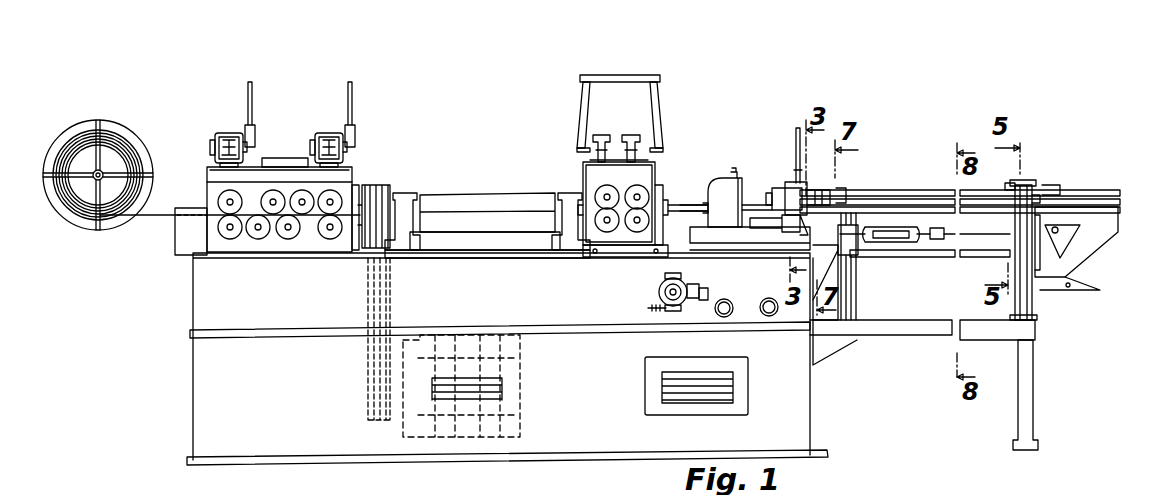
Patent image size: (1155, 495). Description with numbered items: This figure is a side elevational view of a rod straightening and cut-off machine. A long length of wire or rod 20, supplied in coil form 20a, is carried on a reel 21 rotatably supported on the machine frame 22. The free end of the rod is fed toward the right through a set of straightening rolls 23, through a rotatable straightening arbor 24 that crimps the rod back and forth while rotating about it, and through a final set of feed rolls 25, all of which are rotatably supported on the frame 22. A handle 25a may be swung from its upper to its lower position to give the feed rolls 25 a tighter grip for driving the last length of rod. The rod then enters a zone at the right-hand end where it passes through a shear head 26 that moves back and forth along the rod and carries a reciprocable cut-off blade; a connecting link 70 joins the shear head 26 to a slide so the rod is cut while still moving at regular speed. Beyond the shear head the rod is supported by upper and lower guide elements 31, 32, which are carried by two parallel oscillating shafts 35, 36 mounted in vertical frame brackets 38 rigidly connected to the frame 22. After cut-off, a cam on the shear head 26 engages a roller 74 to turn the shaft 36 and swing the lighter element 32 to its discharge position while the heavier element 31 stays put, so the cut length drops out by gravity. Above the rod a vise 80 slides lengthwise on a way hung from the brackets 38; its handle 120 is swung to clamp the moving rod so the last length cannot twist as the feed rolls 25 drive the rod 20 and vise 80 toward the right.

The wire or rod 20 is at (158, 222).
The coil form 20a is at (120, 142).
The reel 21 is at (143, 150).
The machine frame 22 is at (611, 452).
The straightening rolls 23 is at (302, 190).
The rotatable straightening arbor 24 is at (475, 195).
The feed rolls 25 is at (638, 188).
The handle 25a is at (642, 75).
The shear head 26 is at (711, 180).
The guide element 31 is at (938, 228).
The guide element 32 is at (912, 227).
The shaft 35 is at (930, 199).
The shaft 36 is at (912, 190).
The vertical frame brackets 38 is at (1035, 300).
The connecting link 70 is at (1010, 226).
The roller 74 is at (790, 222).
The vise 80 is at (780, 188).
The handle 120 is at (797, 130).